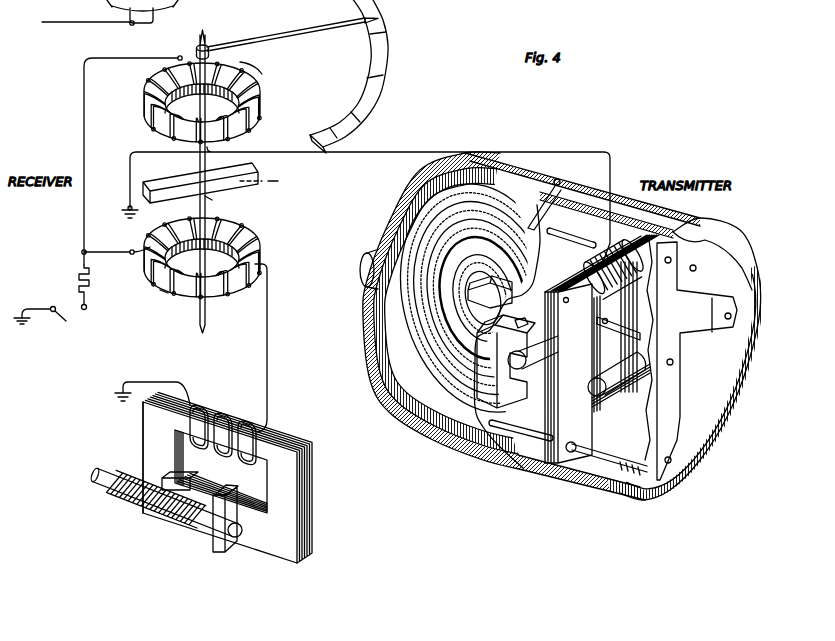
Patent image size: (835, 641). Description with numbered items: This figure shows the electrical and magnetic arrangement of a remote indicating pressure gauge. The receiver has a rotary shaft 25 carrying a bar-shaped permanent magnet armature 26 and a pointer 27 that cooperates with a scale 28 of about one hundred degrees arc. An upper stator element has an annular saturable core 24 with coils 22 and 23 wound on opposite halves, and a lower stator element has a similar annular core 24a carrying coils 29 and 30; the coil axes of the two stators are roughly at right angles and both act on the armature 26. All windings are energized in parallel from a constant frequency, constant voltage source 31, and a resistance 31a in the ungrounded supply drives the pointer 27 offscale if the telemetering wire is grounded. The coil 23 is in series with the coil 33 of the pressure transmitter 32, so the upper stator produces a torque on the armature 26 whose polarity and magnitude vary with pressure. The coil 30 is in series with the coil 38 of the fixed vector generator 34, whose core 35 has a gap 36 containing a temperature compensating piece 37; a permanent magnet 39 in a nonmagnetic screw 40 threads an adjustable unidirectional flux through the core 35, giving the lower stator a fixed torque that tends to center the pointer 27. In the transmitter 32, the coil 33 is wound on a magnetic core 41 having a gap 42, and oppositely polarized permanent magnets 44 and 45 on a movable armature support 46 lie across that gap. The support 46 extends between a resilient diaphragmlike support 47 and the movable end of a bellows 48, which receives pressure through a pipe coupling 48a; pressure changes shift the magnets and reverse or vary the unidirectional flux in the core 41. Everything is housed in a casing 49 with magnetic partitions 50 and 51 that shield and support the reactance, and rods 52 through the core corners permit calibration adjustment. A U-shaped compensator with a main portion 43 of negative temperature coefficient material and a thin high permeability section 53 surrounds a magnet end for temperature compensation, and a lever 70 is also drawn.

The coil 22 is at (160, 82).
The coil 23 is at (258, 91).
The annular core 24 is at (244, 90).
The annular core 24a is at (258, 258).
The rotary shaft 25 is at (200, 322).
The permanent magnet armature 26 is at (172, 183).
The pointer 27 is at (290, 33).
The scale 28 is at (389, 40).
The coil 29 is at (162, 240).
The coil 30 is at (162, 291).
The constant frequency, constant voltage source 31 is at (50, 319).
The resistance 31a is at (79, 280).
The pressure transmitter 32 is at (722, 211).
The coil 33 is at (587, 264).
The fixed vector generator reactance 34 is at (302, 431).
The core 35 is at (143, 428).
The gap 36 is at (234, 488).
The piece of magnetic material 37 is at (229, 542).
The coil 38 is at (228, 414).
The permanent magnet 39 is at (213, 531).
The nonmagnetic screw 40 is at (108, 487).
The magnetic core 41 is at (602, 349).
The gap 42 is at (612, 418).
The main portion of compensator 43 is at (484, 395).
The permanent magnet 44 is at (538, 369).
The permanent magnet 45 is at (607, 375).
The movable armature support 46 is at (490, 292).
The resilient diaphragmlike support 47 is at (696, 327).
The bellows 48 is at (400, 332).
The pipe coupling 48a is at (368, 253).
The casing 49 is at (740, 243).
The partition 50 is at (540, 217).
The partition 51 is at (640, 452).
The rods 52 is at (574, 233).
The thin section of high permeability magnetic material 53 is at (520, 320).
The lever 70 is at (623, 331).